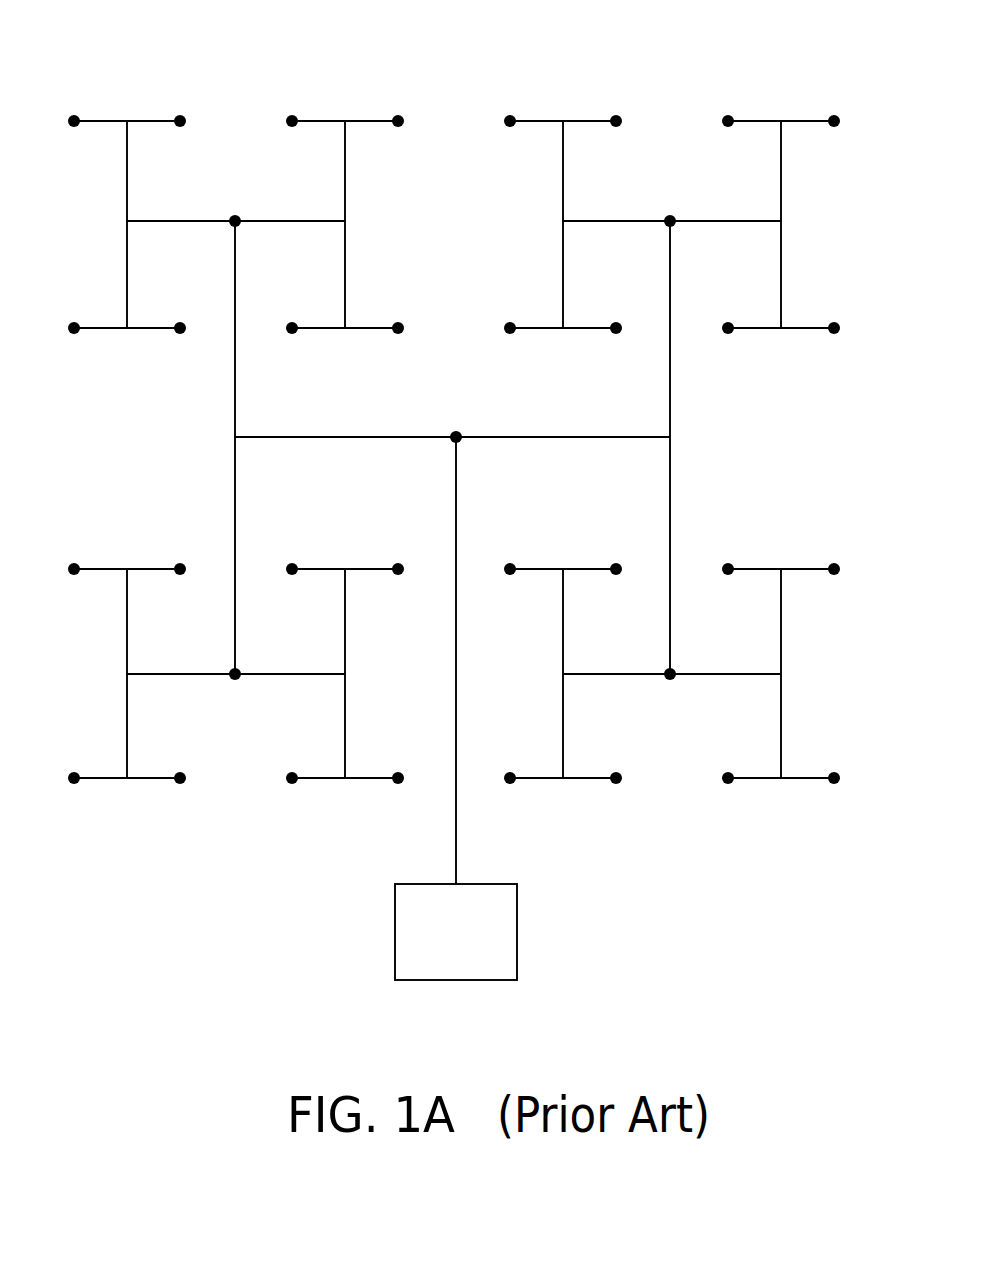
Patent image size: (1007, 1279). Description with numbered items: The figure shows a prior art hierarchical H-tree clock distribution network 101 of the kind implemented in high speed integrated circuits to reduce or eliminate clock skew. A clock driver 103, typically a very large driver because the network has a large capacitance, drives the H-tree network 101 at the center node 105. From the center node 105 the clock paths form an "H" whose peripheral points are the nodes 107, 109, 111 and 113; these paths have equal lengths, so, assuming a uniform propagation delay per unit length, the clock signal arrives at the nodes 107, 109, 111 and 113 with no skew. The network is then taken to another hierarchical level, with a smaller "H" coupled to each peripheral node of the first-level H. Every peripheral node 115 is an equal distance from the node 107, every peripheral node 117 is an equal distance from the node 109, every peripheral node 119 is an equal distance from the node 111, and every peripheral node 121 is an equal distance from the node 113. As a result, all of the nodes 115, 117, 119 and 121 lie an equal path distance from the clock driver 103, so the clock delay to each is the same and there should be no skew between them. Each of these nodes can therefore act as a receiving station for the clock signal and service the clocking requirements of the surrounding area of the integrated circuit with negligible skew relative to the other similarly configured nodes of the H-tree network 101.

The H-tree clock distribution network 101 is at (850, 25).
The clock driver 103 is at (517, 943).
The center node 105 is at (454, 434).
The node 107 is at (237, 218).
The node 109 is at (672, 218).
The node 111 is at (237, 671).
The node 113 is at (672, 671).
The peripheral node 115 is at (180, 120).
The peripheral node 117 is at (616, 120).
The peripheral node 119 is at (180, 568).
The peripheral node 121 is at (616, 568).